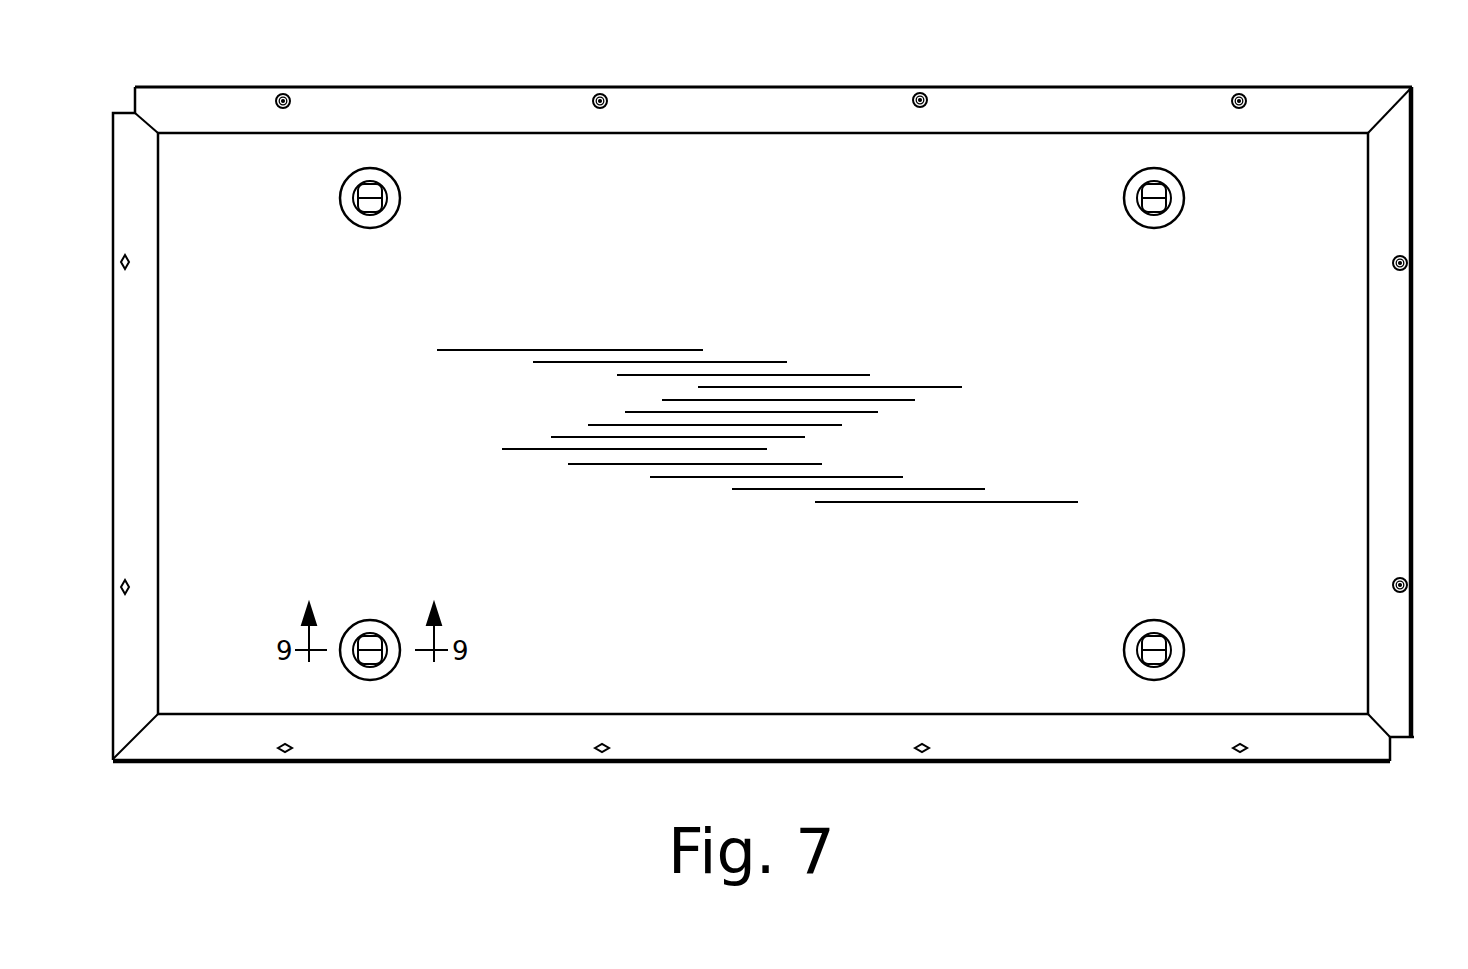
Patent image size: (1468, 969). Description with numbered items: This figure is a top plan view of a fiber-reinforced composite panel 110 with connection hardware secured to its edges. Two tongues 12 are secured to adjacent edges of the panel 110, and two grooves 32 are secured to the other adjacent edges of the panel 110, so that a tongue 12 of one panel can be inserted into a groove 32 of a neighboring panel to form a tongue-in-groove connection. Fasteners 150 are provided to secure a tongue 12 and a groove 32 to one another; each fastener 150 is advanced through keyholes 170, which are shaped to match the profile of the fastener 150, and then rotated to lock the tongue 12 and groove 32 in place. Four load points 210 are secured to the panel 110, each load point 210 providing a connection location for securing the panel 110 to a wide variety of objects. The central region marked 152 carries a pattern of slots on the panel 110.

The tongue 12 is at (145, 380).
The groove 32 is at (753, 124).
The first panel 110 is at (763, 449).
The fastener 150 is at (291, 101).
The vent slots 152 is at (902, 305).
The keyholes 170 is at (132, 587).
The load points 210 is at (370, 228).